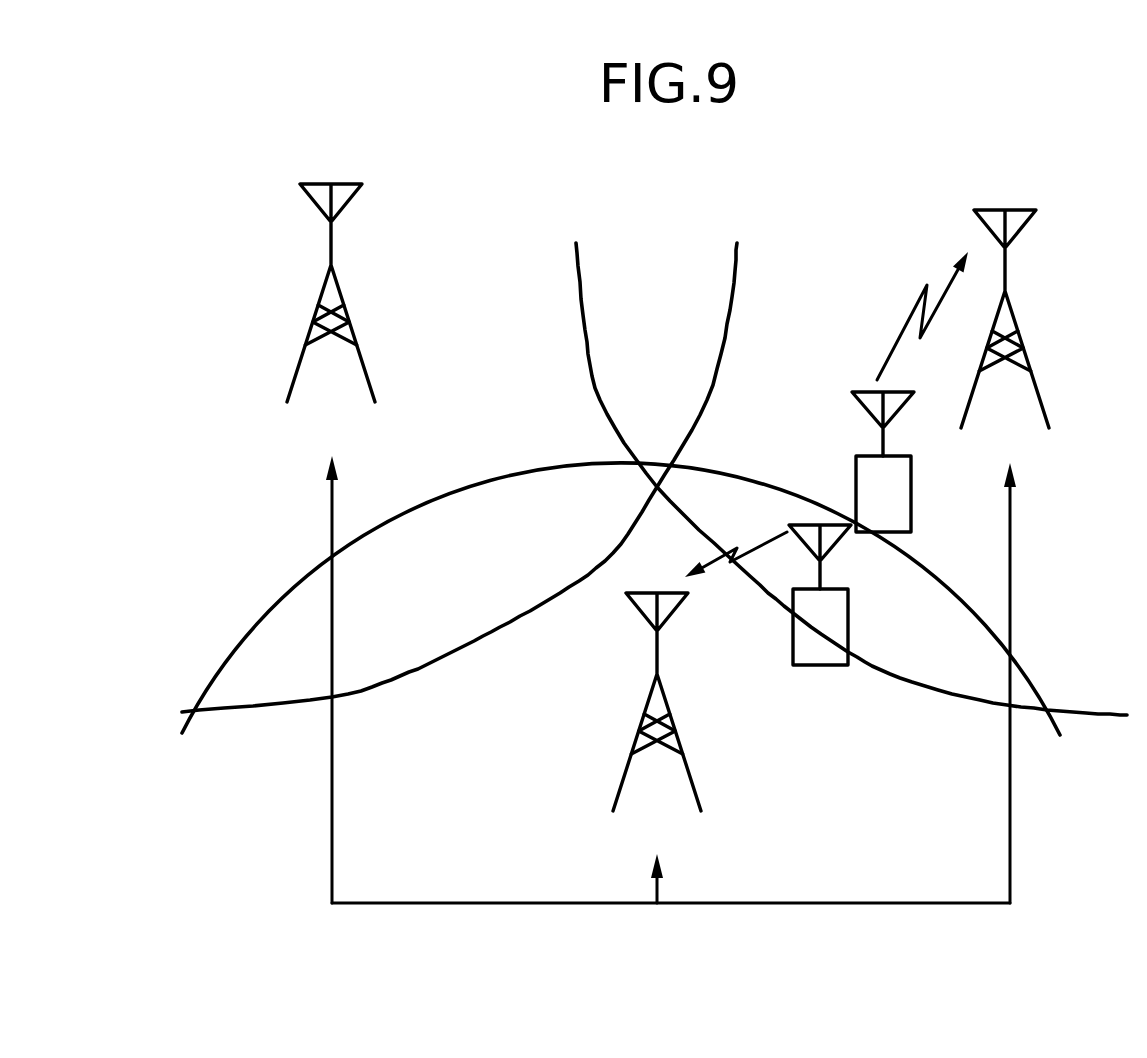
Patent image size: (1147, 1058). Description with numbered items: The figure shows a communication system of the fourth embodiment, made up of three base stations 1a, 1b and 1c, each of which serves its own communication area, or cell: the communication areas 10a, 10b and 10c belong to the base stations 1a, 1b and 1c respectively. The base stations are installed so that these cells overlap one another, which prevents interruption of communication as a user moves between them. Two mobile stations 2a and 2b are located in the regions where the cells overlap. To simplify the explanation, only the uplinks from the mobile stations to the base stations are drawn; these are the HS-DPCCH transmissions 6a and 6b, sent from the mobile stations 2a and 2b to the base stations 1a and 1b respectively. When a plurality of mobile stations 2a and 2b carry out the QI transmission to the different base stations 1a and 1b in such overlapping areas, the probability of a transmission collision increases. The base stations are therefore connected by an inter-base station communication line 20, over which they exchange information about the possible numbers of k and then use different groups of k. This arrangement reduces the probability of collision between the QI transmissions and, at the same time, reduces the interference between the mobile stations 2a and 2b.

The base station 1a is at (622, 776).
The base station 1b is at (1046, 378).
The base station 1c is at (292, 362).
The mobile station 2a is at (850, 630).
The mobile station 2b is at (912, 497).
The HS-DPCCH transmission 6a is at (770, 541).
The HS-DPCCH transmission 6b is at (905, 318).
The communication area (cell) 10a is at (520, 473).
The communication area (cell) 10b is at (575, 284).
The communication area (cell) 10c is at (729, 313).
The inter-base station communication line 20 is at (1012, 843).